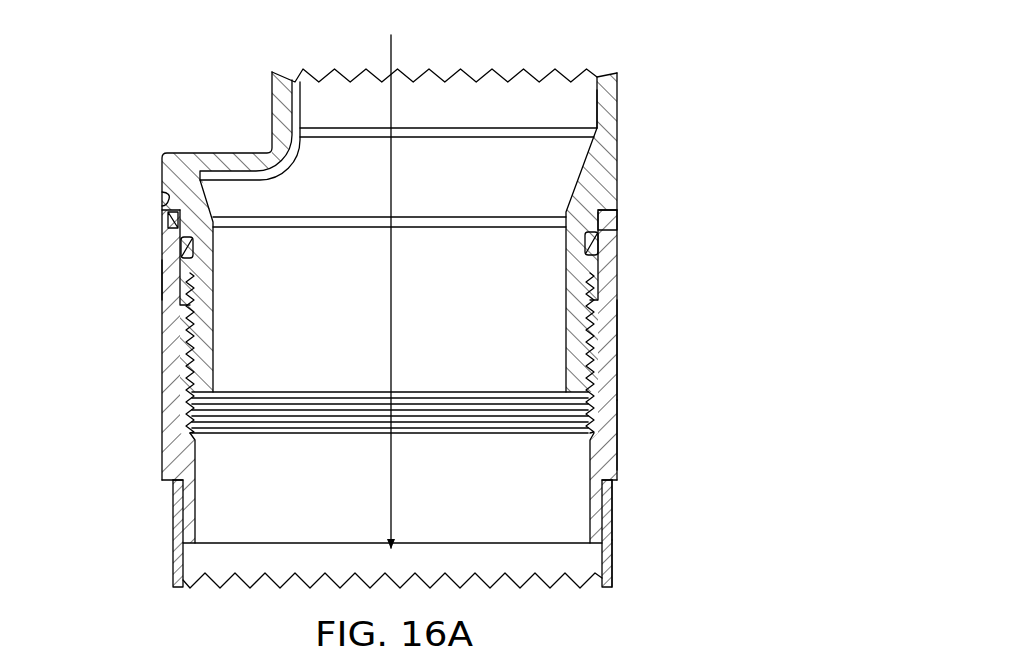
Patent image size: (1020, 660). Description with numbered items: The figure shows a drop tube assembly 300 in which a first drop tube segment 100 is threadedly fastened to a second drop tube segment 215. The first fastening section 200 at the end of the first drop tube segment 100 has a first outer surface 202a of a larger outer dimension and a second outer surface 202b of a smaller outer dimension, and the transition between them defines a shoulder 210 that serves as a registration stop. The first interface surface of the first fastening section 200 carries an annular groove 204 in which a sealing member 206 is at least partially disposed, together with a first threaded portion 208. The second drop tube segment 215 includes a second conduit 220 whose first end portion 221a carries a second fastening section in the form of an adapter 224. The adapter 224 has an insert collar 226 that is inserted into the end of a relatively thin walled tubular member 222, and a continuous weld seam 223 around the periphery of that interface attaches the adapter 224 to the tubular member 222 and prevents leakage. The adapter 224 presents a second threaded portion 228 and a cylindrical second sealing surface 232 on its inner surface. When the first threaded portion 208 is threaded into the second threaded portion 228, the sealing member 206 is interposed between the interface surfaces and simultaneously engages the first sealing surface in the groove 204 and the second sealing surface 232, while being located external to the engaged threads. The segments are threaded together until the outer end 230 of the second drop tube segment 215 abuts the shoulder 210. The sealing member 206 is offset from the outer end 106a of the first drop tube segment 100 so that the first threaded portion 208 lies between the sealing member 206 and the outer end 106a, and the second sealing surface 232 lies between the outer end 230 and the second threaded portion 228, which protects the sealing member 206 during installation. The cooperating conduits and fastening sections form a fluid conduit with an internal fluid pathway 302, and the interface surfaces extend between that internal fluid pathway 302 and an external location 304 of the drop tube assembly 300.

The first drop tube segment 100 is at (502, 107).
The first fastening section 200 is at (441, 240).
The first outer surface 202a is at (679, 128).
The second outer surface 202b is at (671, 210).
The groove 204 is at (590, 252).
The sealing member 206 is at (604, 246).
The first threaded portion 208 is at (597, 322).
The shoulder 210 is at (167, 231).
The second drop tube segment 215 is at (710, 430).
The second conduit 220 is at (476, 376).
The first end portion 221a is at (498, 508).
The tubular member 222 is at (613, 543).
The weld seam 223 is at (613, 484).
The adapter 224 is at (687, 350).
The insert collar 226 is at (183, 514).
The second threaded portion 228 is at (196, 346).
The outer end 230 is at (163, 193).
The second sealing surface 232 is at (244, 264).
The drop tube assembly 300 is at (550, 173).
The internal fluid pathway 302 is at (392, 328).
The external location 304 is at (160, 278).
The outer end 106a is at (577, 393).